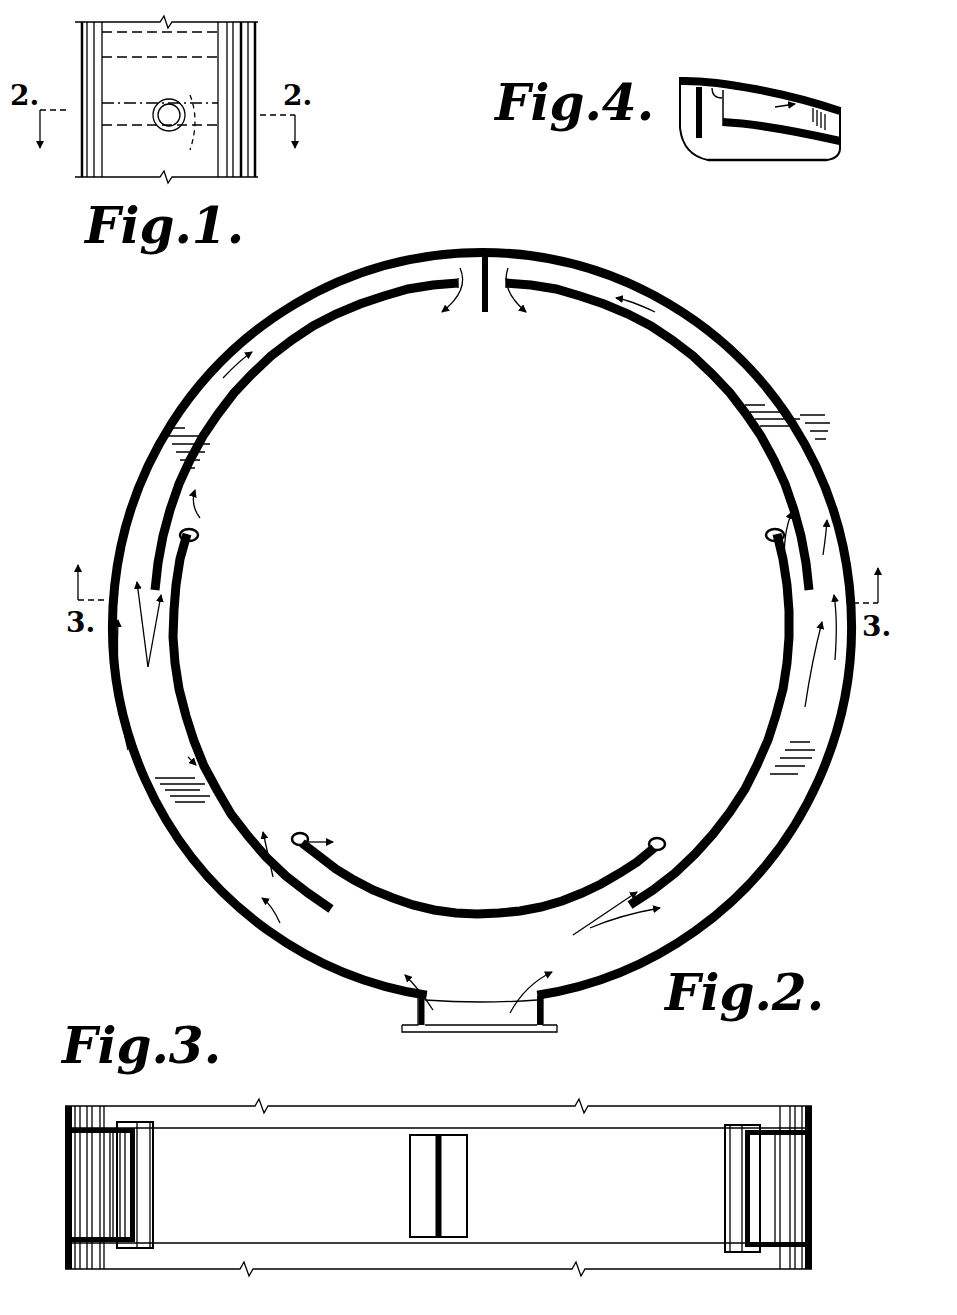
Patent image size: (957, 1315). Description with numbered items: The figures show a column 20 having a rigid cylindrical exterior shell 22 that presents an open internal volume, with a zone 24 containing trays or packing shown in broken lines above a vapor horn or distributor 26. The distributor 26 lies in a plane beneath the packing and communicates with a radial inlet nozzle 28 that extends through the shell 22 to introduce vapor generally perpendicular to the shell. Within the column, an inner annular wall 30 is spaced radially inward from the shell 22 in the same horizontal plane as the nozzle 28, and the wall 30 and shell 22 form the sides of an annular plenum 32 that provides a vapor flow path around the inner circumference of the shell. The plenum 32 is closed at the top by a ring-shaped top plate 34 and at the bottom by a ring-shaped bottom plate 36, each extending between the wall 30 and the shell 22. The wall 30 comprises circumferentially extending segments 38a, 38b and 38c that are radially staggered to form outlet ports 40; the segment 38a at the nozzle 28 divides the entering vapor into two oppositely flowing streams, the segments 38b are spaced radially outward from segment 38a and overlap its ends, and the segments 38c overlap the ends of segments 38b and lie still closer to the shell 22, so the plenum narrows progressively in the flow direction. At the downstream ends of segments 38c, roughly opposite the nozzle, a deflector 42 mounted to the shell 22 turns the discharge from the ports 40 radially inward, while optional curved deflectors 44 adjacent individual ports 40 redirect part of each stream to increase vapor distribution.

In FIG. 1, the column 20 is at (262, 68).
In FIG. 2, the column 20 is at (250, 310).
In FIG. 3, the column 20 is at (305, 1100).
In FIG. 1, the exterior shell 22 is at (256, 160).
In FIG. 4, the exterior shell 22 is at (747, 84).
In FIG. 2, the exterior shell 22 is at (352, 280).
In FIG. 3, the exterior shell 22 is at (65, 1117).
In FIG. 1, the packing zone 24 is at (82, 43).
In FIG. 1, the vapor distributor 26 is at (207, 129).
In FIG. 2, the vapor distributor 26 is at (380, 896).
In FIG. 3, the vapor distributor 26 is at (632, 1124).
In FIG. 1, the radial inlet nozzle 28 is at (163, 130).
In FIG. 2, the radial inlet nozzle 28 is at (557, 1030).
In FIG. 2, the inner annular wall 30 is at (505, 912).
In FIG. 3, the inner annular wall 30 is at (302, 1209).
In FIG. 4, the annular plenum 32 is at (810, 102).
In FIG. 2, the annular plenum 32 is at (200, 760).
In FIG. 3, the annular plenum 32 is at (85, 1225).
In FIG. 3, the top plate 34 is at (82, 1108).
In FIG. 2, the bottom plate 36 is at (222, 398).
In FIG. 3, the bottom plate 36 is at (115, 1246).
In FIG. 2, the wall segment 38a is at (522, 916).
In FIG. 2, the wall segment 38b is at (180, 687).
In FIG. 3, the wall segment 38b is at (130, 1168).
In FIG. 4, the wall segment 38c is at (793, 136).
In FIG. 2, the wall segment 38c is at (300, 341).
In FIG. 3, the wall segment 38c is at (100, 1197).
In FIG. 4, the outlet port 40 is at (713, 86).
In FIG. 2, the outlet port 40 is at (470, 262).
In FIG. 3, the outlet port 40 is at (410, 1178).
In FIG. 4, the deflector 42 is at (694, 138).
In FIG. 2, the deflector 42 is at (486, 314).
In FIG. 3, the deflector 42 is at (435, 1212).
In FIG. 2, the curved deflector 44 is at (200, 537).
In FIG. 3, the curved deflector 44 is at (150, 1140).